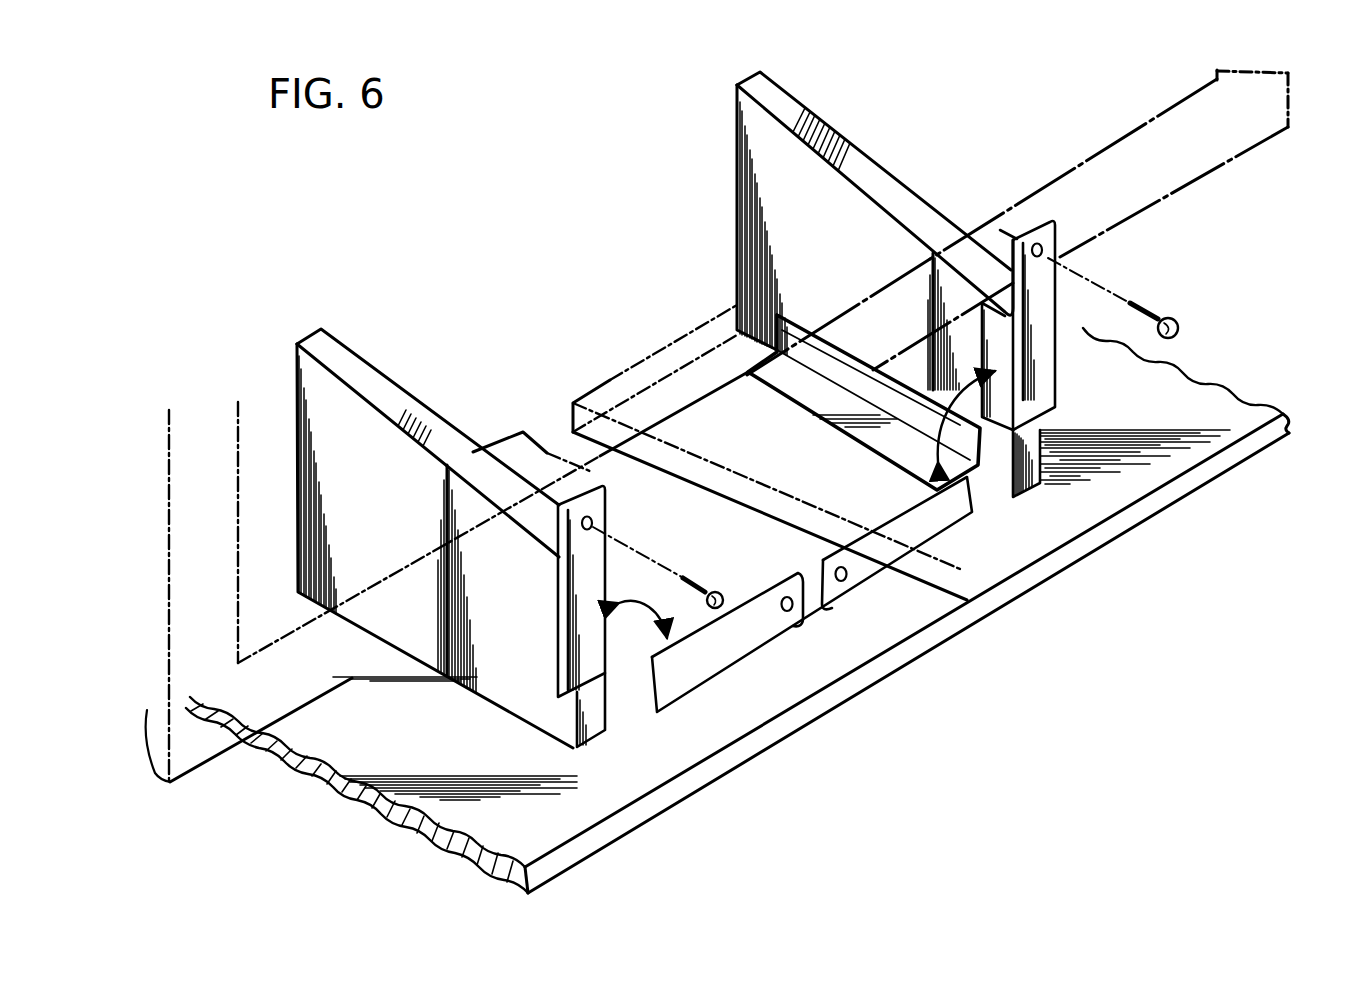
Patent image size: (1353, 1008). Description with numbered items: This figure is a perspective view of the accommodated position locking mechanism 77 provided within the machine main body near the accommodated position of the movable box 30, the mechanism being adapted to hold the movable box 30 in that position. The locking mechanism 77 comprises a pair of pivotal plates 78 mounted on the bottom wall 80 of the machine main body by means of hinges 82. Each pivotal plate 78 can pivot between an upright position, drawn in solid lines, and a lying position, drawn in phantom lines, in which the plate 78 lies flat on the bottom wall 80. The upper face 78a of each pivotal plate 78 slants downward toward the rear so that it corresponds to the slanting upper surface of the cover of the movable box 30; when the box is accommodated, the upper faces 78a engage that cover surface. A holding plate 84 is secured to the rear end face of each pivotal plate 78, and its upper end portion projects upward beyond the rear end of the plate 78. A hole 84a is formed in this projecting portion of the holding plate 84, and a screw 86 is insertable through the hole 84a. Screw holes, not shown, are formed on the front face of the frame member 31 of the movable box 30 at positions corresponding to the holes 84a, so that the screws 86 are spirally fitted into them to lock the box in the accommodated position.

The movable box 30 is at (370, 698).
The frame member 31 is at (1205, 176).
The accommodated position locking mechanism 77 is at (562, 188).
The pivotal plate 78 is at (298, 407).
The upper face 78a is at (372, 380).
The bottom wall 80 is at (808, 718).
The hinge 82 is at (841, 353).
The holding plate 84 is at (577, 640).
The hole 84a is at (603, 540).
The screw 86 is at (712, 588).